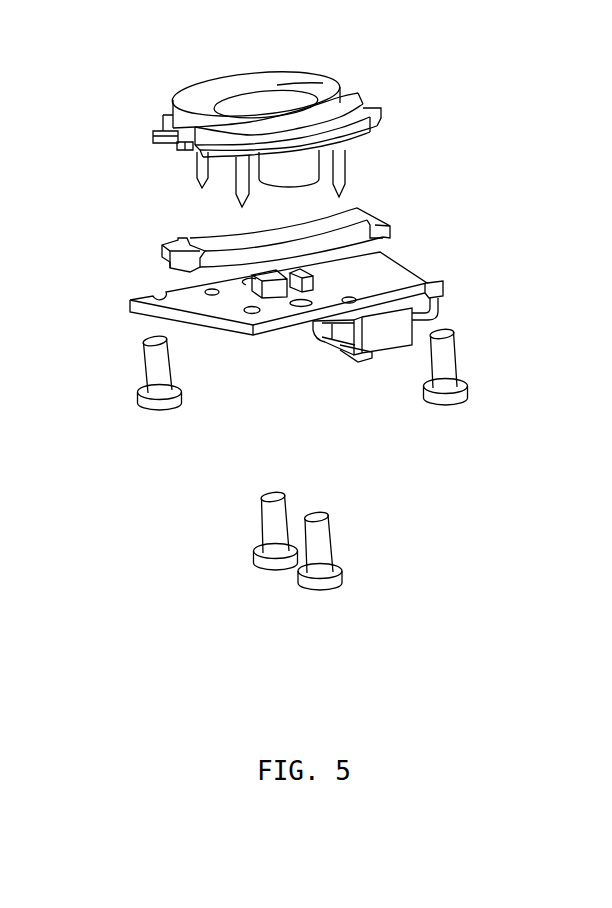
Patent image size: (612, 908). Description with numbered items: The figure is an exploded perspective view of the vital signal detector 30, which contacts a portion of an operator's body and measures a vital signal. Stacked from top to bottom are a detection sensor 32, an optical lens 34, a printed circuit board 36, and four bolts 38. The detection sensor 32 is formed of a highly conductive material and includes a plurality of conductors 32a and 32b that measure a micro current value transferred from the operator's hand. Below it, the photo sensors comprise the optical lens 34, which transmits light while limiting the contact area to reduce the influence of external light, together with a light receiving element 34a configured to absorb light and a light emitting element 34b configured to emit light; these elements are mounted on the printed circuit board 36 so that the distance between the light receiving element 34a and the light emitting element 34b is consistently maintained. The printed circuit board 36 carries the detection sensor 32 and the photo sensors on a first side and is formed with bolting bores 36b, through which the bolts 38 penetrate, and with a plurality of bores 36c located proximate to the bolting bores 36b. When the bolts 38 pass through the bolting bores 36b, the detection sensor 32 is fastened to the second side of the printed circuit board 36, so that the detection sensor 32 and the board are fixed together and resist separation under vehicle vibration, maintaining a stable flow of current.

The vital signal detector 30 is at (132, 45).
The detection sensor 32 is at (490, 42).
The conductor 32a is at (320, 83).
The conductor 32b is at (372, 118).
The optical lens 34 is at (352, 228).
The light receiving element 34a is at (210, 291).
The light emitting element 34b is at (308, 281).
The printed circuit board 36 is at (433, 284).
The bolting bore 36b is at (303, 305).
The bore 36c is at (251, 314).
The bolt 38 is at (183, 400).